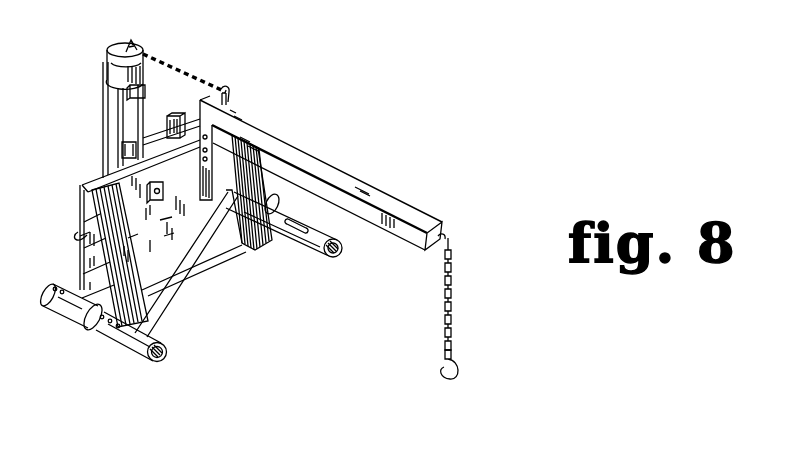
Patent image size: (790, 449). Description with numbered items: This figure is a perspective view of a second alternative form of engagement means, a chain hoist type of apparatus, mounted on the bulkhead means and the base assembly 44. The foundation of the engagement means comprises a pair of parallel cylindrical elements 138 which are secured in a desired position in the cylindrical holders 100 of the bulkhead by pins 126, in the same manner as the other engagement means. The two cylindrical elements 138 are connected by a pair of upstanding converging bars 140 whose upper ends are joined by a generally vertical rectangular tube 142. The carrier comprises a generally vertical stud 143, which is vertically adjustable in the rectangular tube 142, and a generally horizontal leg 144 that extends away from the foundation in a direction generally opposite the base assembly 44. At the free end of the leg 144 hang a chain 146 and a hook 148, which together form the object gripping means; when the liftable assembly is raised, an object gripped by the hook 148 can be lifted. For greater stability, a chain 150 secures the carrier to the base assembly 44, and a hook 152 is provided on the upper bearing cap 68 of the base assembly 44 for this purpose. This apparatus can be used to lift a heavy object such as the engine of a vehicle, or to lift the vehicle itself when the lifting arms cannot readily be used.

The base assembly 44 is at (100, 115).
The upper bearing cap 68 is at (112, 48).
The hook 152 is at (133, 44).
The chain 150 is at (176, 58).
The stud 143 is at (204, 113).
The rectangular tube 142 is at (225, 152).
The horizontal leg 144 is at (348, 170).
The chain 146 is at (456, 295).
The hook 148 is at (458, 361).
The pins 126 is at (58, 282).
The converging bars 140 is at (177, 285).
The cylindrical elements 138 is at (318, 256).
The cylindrical holder 100 is at (70, 328).